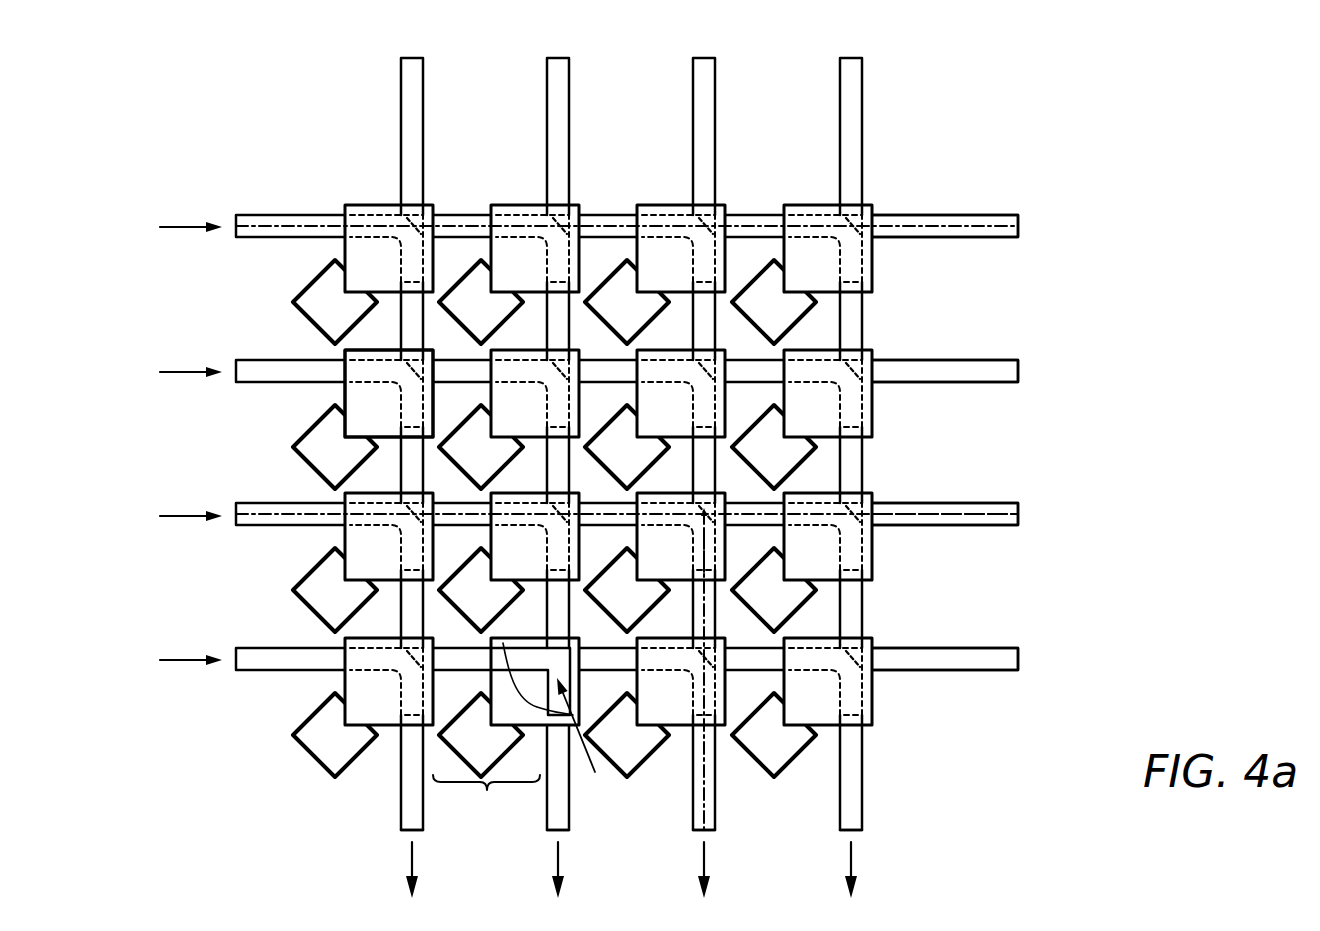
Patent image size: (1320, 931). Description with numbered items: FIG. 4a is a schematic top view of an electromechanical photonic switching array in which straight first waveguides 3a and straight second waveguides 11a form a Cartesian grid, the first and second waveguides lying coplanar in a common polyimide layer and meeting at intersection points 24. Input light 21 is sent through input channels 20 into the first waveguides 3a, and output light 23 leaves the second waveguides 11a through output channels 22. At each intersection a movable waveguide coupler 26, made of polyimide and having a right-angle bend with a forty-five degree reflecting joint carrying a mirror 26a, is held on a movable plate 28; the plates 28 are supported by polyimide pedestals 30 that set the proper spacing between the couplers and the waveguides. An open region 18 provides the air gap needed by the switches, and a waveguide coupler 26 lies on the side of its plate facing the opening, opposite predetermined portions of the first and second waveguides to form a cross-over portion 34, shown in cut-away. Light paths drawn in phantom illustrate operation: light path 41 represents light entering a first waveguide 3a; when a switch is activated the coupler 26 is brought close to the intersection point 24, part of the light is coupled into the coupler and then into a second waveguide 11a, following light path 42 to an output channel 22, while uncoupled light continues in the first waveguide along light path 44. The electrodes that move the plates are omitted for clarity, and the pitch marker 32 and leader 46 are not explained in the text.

The first waveguide 3a is at (952, 237).
The second waveguide 11a is at (401, 122).
The open region 18 is at (445, 332).
The input channel 20 is at (236, 227).
The input light 21 is at (178, 226).
The output channel 22 is at (417, 832).
The output light 23 is at (414, 868).
The intersection point 24 is at (540, 655).
The movable waveguide coupler 26 is at (363, 658).
The mirror 26a is at (855, 226).
The movable plate 28 is at (360, 687).
The pedestal 30 is at (328, 757).
The pixel pitch 32 is at (486, 799).
The cross-over portion 34 is at (585, 738).
The light path 41 is at (292, 227).
The light path 42 is at (703, 617).
The light path 44 is at (925, 514).
The column line junction 46 is at (704, 553).